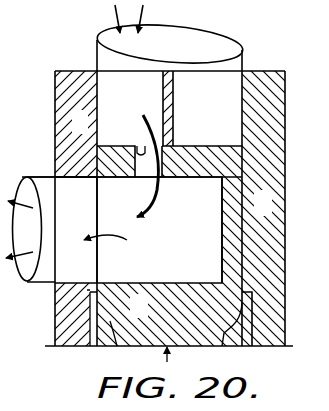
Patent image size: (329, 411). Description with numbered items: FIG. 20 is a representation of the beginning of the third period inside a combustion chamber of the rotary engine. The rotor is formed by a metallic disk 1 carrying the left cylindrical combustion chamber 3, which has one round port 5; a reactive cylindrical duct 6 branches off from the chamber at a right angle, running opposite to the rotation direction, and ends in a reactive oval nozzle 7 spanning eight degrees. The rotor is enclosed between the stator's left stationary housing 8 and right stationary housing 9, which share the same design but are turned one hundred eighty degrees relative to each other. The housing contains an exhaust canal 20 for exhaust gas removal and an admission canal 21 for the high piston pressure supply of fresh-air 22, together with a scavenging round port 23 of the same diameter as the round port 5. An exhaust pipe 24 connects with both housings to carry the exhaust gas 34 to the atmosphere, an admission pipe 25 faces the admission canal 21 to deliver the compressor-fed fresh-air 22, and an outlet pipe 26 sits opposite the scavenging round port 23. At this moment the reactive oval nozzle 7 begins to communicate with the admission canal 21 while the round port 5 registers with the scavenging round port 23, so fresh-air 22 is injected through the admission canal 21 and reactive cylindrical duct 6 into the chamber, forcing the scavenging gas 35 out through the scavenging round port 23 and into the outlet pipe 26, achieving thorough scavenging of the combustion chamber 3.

The metallic disk 1 is at (146, 314).
The left cylindrical combustion chamber 3 is at (170, 229).
The round port 5 is at (97, 197).
The reactive cylindrical duct 6 is at (161, 162).
The reactive oval nozzle 7 is at (138, 148).
The left stationary housing 8 is at (84, 132).
The right stationary housing 9 is at (268, 212).
The exhaust canal 20 is at (211, 121).
The admission canal 21 is at (132, 111).
The fresh-air 22 is at (116, 14).
The scavenging round port 23 is at (99, 257).
The exhaust pipe 24 is at (194, 53).
The admission pipe 25 is at (105, 53).
The outlet pipe 26 is at (47, 268).
The exhaust gas 34 is at (207, 213).
The scavenging gas 35 is at (5, 200).